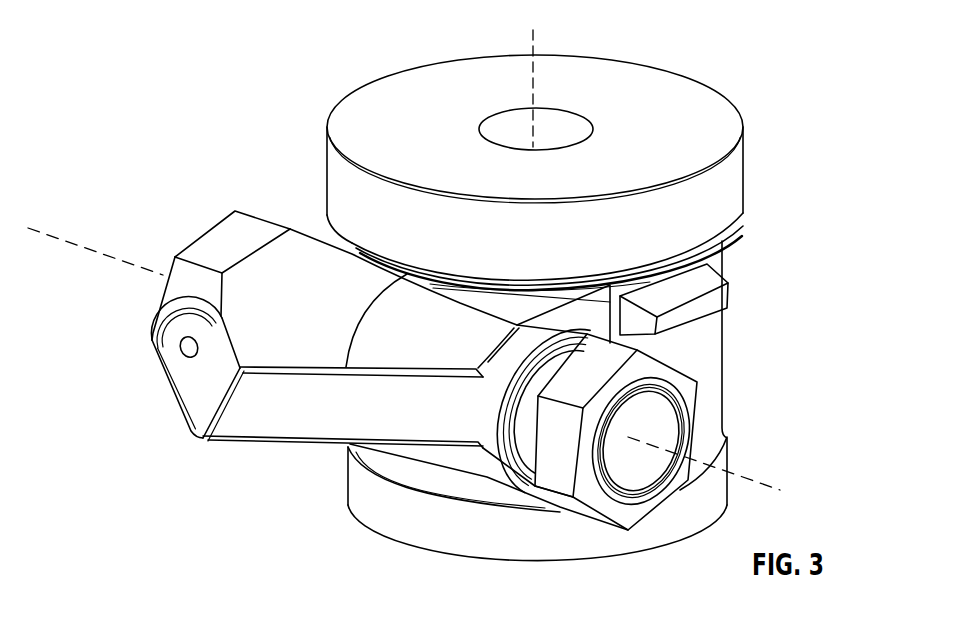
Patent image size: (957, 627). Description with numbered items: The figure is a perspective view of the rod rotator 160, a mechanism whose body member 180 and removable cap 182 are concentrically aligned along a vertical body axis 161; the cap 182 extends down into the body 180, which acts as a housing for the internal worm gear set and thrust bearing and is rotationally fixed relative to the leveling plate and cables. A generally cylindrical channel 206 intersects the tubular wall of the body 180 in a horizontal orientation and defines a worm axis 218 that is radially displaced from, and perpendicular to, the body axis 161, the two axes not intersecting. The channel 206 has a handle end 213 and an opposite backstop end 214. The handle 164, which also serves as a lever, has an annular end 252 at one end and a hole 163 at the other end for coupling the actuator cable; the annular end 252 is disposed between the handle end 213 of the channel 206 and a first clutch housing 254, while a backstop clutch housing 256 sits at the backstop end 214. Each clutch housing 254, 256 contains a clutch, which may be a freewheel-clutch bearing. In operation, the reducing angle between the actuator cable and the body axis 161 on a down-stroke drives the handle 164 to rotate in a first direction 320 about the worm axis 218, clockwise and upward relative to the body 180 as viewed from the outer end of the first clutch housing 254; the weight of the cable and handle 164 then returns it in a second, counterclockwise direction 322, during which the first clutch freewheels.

The rod rotator 160 is at (194, 67).
The body axis 161 is at (533, 47).
The removable cap 182 is at (697, 93).
The body member 180 is at (715, 258).
The backstop clutch housing 256 is at (230, 213).
The channel 206 is at (265, 262).
The backstop end 214 is at (286, 248).
The handle end 213 is at (470, 323).
The worm axis 218 is at (45, 233).
The second direction 322 is at (145, 236).
The first direction 320 is at (116, 300).
The handle 164 is at (290, 430).
The hole 163 is at (182, 354).
The annular end 252 is at (527, 380).
The first clutch housing 254 is at (690, 417).